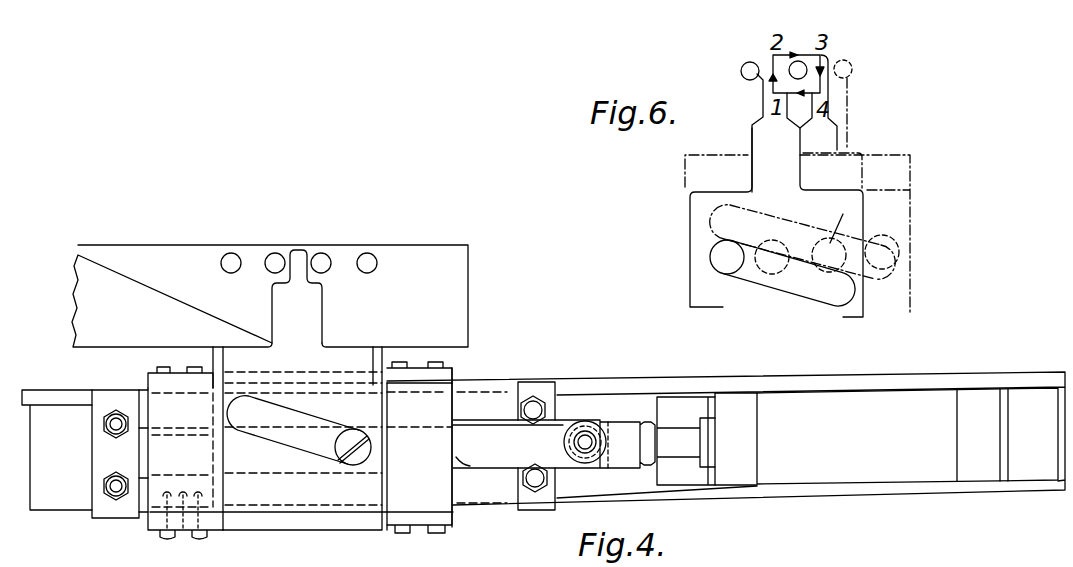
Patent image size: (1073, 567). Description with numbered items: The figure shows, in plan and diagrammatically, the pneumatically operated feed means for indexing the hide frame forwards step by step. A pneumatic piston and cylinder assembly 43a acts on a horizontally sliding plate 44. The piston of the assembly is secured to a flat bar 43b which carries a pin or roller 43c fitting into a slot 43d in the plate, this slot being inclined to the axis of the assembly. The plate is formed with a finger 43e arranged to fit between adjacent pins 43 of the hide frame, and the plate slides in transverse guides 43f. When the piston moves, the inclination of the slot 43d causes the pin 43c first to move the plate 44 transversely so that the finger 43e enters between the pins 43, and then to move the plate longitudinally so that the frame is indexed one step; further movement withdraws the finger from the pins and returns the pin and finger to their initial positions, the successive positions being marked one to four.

In FIG. 4, the pins 43 is at (233, 254).
In FIG. 6, the pins 43 is at (790, 66).
In FIG. 4, the pneumatic piston and cylinder assembly 43a is at (853, 482).
In FIG. 4, the flat bar 43b is at (550, 437).
In FIG. 6, the flat bar 43b is at (697, 212).
In FIG. 4, the pin or roller 43c is at (356, 456).
In FIG. 6, the pin or roller 43c is at (712, 256).
In FIG. 4, the slot 43d is at (278, 411).
In FIG. 6, the slot 43d is at (757, 285).
In FIG. 4, the finger 43e is at (297, 256).
In FIG. 6, the finger 43e is at (763, 105).
In FIG. 4, the transverse guides 43f is at (172, 382).
In FIG. 4, the horizontally sliding plate 44 is at (383, 356).